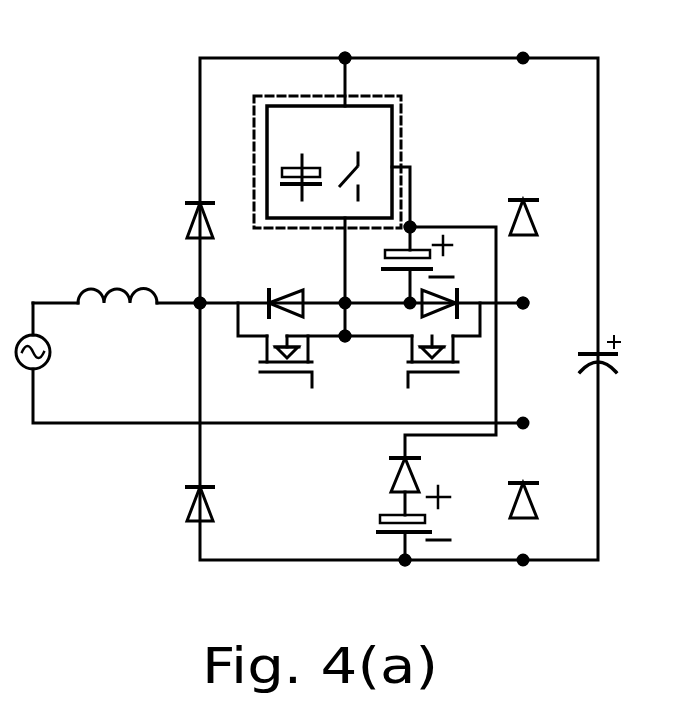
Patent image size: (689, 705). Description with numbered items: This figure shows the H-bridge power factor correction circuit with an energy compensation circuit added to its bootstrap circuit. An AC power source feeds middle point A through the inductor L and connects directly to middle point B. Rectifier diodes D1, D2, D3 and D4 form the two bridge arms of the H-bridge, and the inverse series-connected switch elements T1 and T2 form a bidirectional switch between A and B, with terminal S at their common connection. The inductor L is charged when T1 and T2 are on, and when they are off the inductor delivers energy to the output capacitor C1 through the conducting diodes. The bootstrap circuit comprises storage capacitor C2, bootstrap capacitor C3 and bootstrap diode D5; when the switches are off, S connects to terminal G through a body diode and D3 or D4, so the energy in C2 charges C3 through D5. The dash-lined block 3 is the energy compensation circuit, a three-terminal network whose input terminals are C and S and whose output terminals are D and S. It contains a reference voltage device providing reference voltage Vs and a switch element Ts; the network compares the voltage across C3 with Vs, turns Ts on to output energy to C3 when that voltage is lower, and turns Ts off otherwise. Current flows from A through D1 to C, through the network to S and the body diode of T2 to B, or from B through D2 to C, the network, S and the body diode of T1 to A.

The energy compensation circuit 3 is at (383, 93).
The reference voltage Vs is at (301, 158).
The switch element Ts is at (355, 158).
The rectifier diode D1 is at (220, 202).
The rectifier diode D2 is at (543, 200).
The rectifier diode D3 is at (543, 487).
The rectifier diode D4 is at (222, 487).
The bootstrap diode D5 is at (436, 469).
The output capacitor C1 is at (621, 347).
The storage capacitor C2 is at (436, 523).
The bootstrap capacitor C3 is at (436, 269).
The inductor L is at (117, 281).
The switch element T1 is at (285, 355).
The switch element T2 is at (435, 355).
The middle point A is at (189, 289).
The middle point B is at (536, 291).
The input terminal C is at (353, 43).
The output terminal D is at (424, 213).
The terminal S is at (357, 321).
The terminal G is at (408, 578).